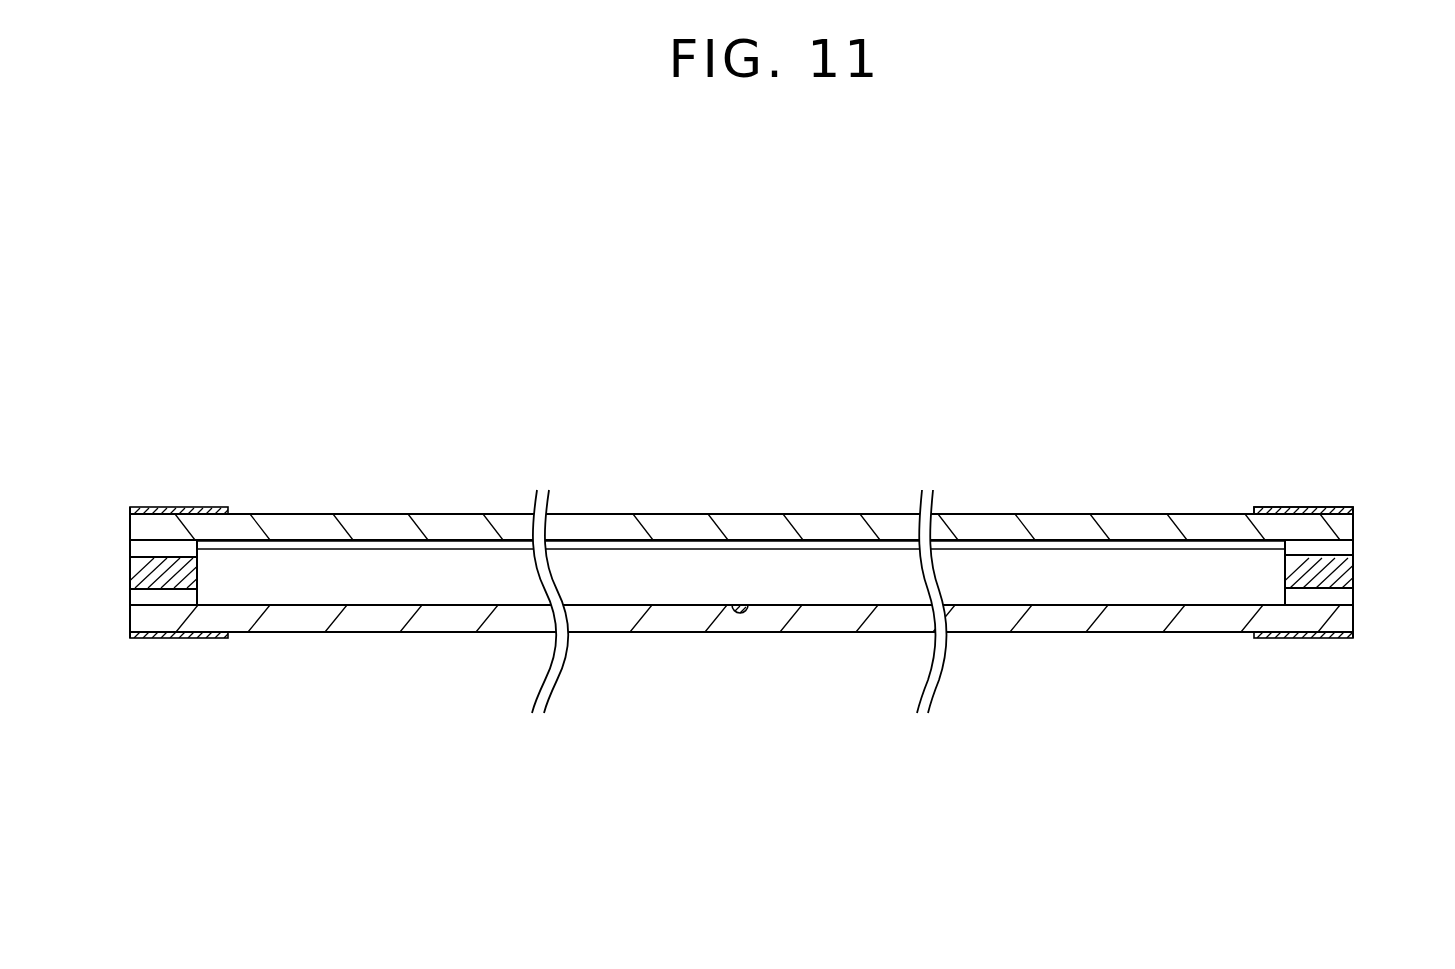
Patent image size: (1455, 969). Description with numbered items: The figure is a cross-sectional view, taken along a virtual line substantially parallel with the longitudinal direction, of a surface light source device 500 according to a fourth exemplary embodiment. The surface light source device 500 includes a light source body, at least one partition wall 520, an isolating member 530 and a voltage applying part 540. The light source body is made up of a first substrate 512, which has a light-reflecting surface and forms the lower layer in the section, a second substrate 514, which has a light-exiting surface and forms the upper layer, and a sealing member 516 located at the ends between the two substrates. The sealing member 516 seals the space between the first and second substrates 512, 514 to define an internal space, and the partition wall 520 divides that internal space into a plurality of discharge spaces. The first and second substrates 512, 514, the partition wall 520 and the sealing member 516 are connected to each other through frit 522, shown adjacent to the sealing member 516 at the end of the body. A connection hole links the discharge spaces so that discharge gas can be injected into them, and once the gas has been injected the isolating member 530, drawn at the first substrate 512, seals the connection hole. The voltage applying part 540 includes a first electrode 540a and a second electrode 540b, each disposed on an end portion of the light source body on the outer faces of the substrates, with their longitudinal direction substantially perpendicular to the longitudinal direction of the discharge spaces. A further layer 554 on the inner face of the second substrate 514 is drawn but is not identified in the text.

The surface light source device 500 is at (805, 157).
The first substrate 512 is at (643, 607).
The second substrate 514 is at (470, 515).
The sealing member 516 is at (163, 562).
The partition wall 520 is at (997, 570).
The frit 522 is at (173, 598).
The isolating member 530 is at (741, 615).
The voltage applying part 540 is at (1343, 498).
The first electrode 540a is at (221, 508).
The second electrode 540b is at (1262, 506).
The electrode layer 554 is at (400, 548).